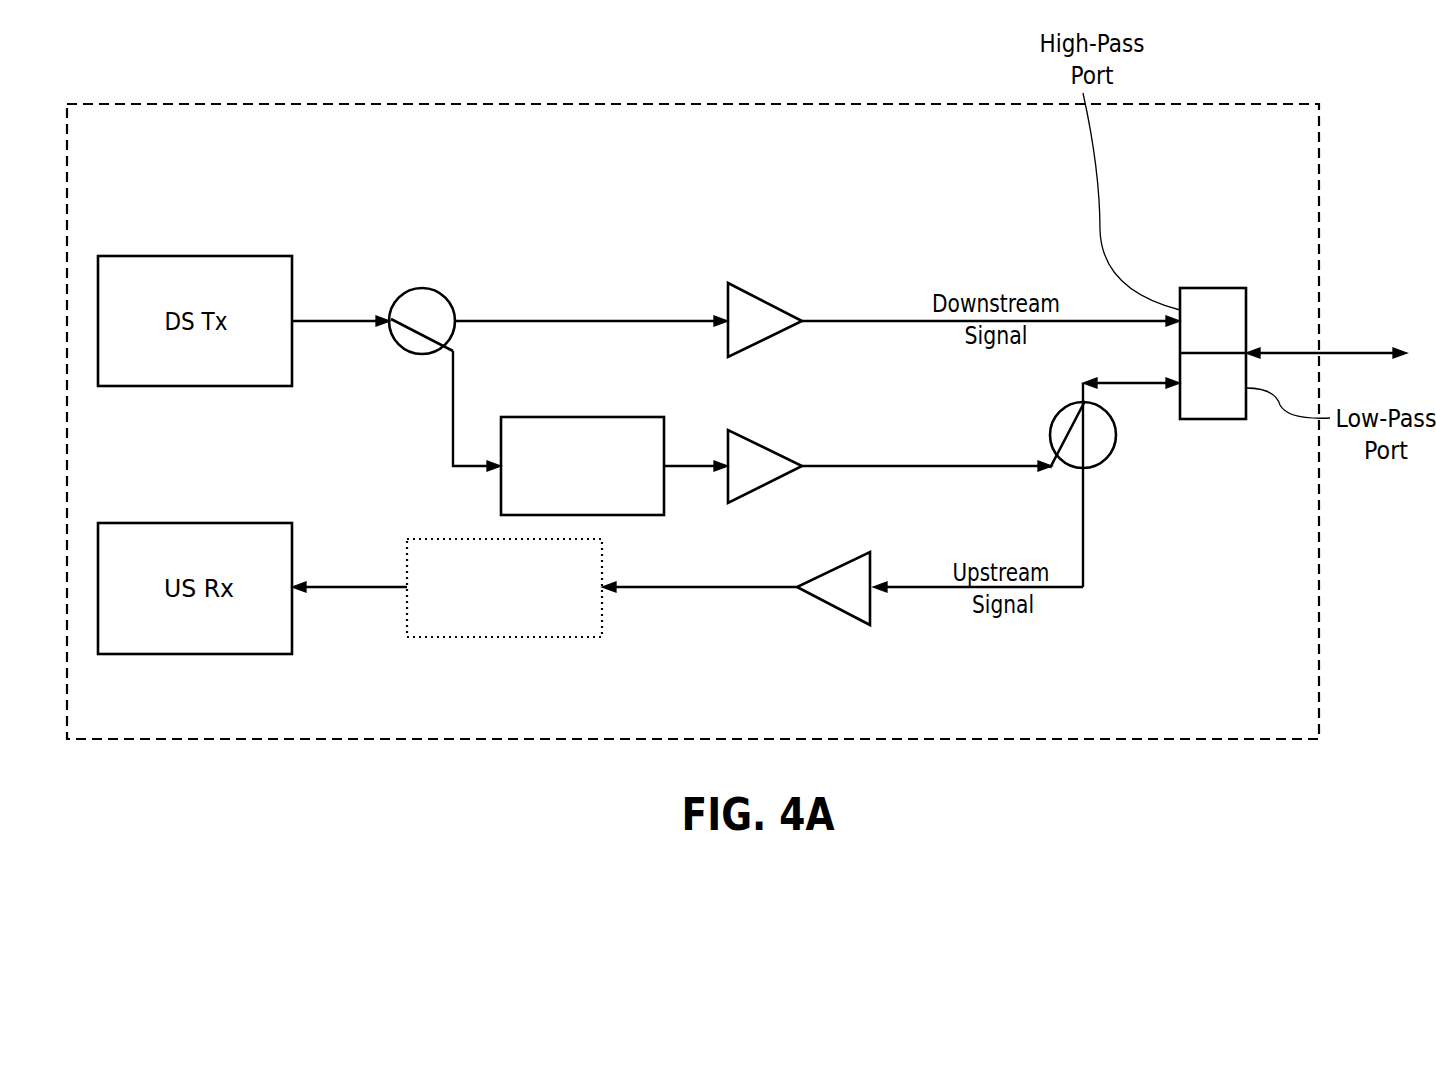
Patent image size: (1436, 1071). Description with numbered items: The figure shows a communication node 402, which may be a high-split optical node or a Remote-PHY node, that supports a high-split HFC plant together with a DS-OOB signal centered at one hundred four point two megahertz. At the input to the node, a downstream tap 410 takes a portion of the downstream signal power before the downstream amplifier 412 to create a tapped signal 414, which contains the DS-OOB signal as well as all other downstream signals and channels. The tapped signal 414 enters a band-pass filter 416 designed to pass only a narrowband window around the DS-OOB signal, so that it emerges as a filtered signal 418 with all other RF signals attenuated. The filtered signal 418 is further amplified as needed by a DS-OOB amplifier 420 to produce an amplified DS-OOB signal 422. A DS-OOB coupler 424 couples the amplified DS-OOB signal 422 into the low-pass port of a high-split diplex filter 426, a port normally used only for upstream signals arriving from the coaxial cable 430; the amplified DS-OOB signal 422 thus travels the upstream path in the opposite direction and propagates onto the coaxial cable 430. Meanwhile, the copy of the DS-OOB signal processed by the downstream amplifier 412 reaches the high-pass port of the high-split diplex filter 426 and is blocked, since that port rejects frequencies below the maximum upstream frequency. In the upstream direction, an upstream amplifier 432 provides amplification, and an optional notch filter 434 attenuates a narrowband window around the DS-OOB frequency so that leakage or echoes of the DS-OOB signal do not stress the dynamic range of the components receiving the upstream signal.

The communication node 402 is at (422, 103).
The downstream tap 410 is at (422, 289).
The downstream amplifier 412 is at (760, 297).
The tapped signal 414 is at (453, 390).
The band-pass filter 416 is at (540, 417).
The filtered signal 418 is at (700, 468).
The DS-OOB amplifier 420 is at (770, 450).
The amplified DS-OOB signal 422 is at (927, 465).
The DS-OOB coupler 424 is at (1117, 437).
The high-split diplex filter 426 is at (1215, 288).
The coaxial cable 430 is at (1341, 316).
The upstream amplifier 432 is at (820, 605).
The optional notch filter 434 is at (472, 638).